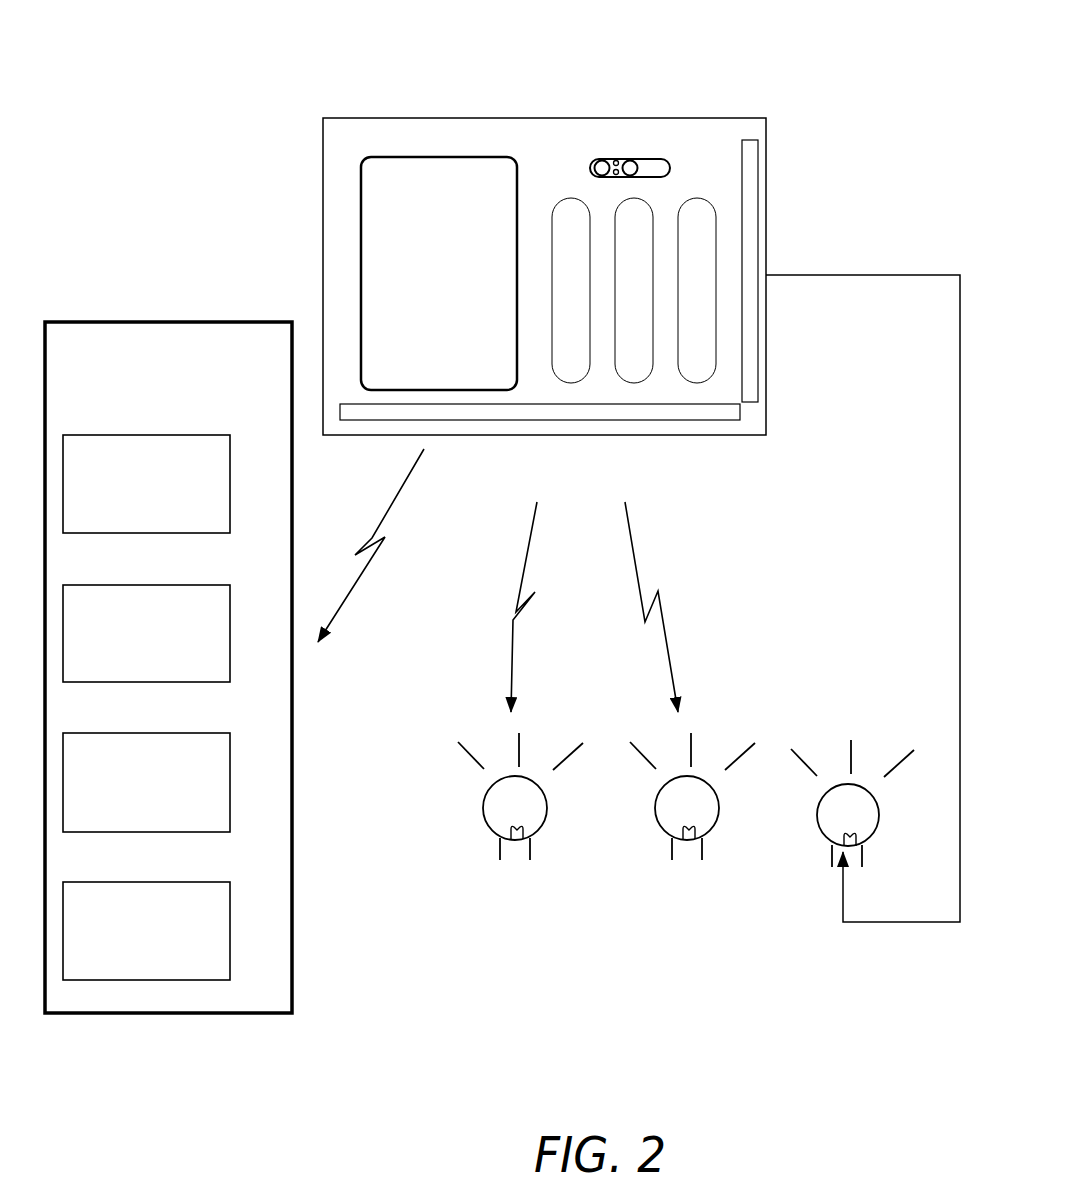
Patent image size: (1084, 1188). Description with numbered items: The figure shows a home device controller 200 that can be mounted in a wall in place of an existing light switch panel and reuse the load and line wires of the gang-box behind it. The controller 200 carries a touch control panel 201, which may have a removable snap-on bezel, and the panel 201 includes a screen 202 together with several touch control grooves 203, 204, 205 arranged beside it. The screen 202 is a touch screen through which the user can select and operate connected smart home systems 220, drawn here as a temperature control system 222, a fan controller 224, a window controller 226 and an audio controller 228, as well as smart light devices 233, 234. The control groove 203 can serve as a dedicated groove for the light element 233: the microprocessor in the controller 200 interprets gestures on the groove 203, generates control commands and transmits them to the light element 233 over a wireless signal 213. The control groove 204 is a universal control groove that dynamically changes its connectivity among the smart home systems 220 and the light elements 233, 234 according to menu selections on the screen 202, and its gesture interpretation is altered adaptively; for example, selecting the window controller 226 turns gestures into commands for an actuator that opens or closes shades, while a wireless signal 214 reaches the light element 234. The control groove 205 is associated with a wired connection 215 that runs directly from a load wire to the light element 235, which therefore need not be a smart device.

The home device controller 200 is at (357, 100).
The touch control panel 201 is at (687, 181).
The screen 202 is at (395, 221).
The touch control groove 203 is at (563, 357).
The universal control groove 204 is at (630, 357).
The touch control groove 205 is at (692, 358).
The first wireless signal 213 is at (505, 607).
The second wireless signal 214 is at (663, 607).
The wired connection 215 is at (863, 598).
The smart home systems 220 is at (150, 393).
The temperature control system 222 is at (129, 523).
The fan controller 224 is at (129, 660).
The window controller 226 is at (129, 823).
The audio controller 228 is at (129, 971).
The light element 233 is at (458, 866).
The light element 234 is at (629, 866).
The light element 235 is at (787, 871).